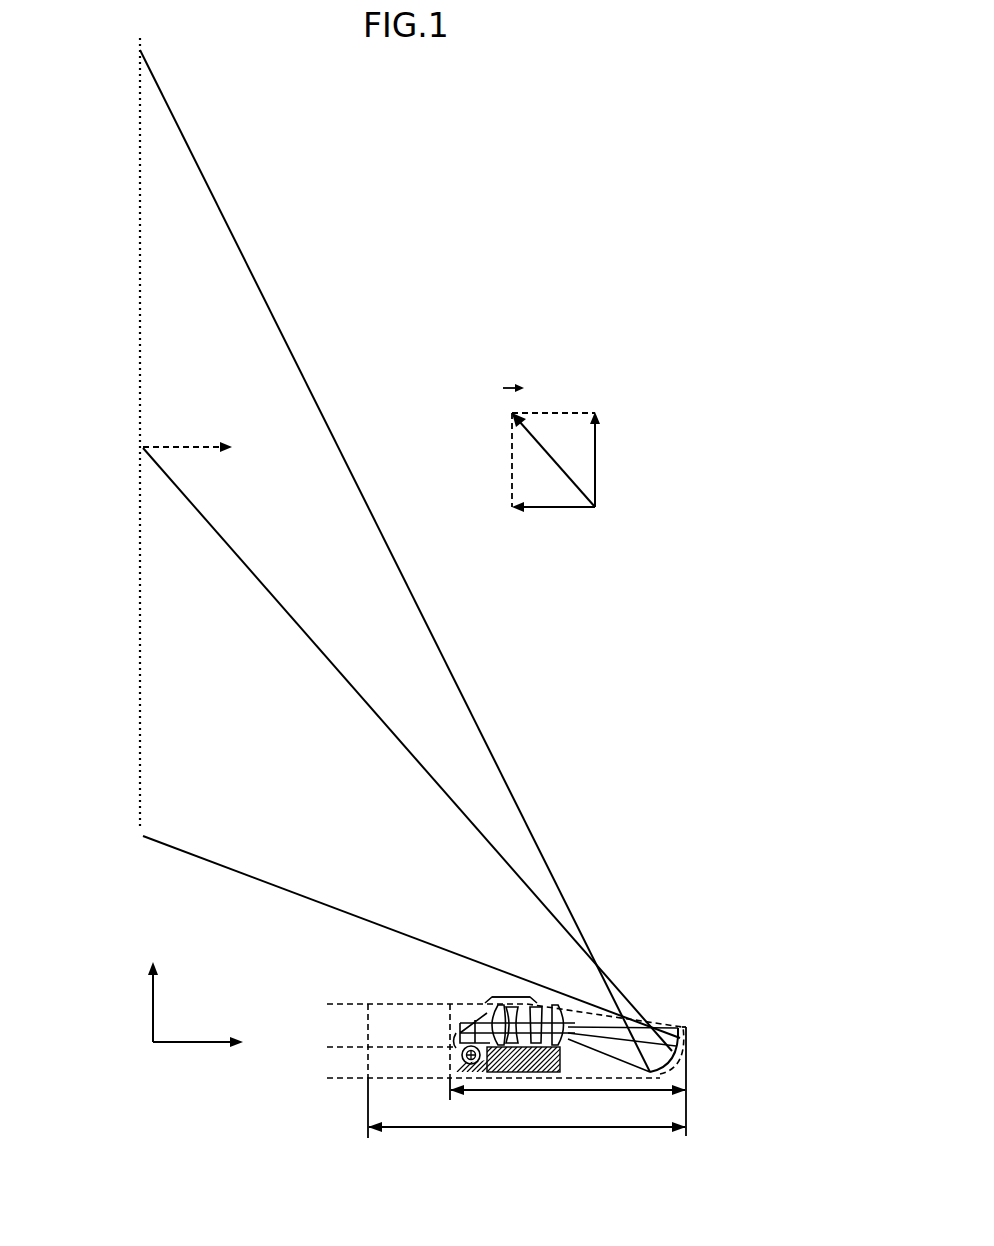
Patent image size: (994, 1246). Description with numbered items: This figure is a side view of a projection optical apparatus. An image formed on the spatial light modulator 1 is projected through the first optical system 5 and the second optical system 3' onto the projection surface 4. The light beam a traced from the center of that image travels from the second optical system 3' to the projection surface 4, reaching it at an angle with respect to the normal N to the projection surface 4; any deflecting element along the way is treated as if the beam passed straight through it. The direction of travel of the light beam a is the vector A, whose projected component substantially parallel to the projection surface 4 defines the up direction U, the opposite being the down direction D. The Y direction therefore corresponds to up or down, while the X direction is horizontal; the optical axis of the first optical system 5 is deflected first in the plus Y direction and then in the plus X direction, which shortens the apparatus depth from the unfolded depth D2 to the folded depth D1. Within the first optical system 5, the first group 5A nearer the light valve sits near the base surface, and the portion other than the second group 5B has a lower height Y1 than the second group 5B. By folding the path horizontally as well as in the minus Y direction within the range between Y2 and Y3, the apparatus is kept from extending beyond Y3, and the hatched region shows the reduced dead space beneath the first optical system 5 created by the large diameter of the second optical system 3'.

The spatial light modulator 1 is at (450, 1045).
The projection surface 4 is at (140, 270).
The first optical system 5 is at (542, 991).
The first group 5A is at (462, 1056).
The second group 5B is at (527, 996).
The second optical system 3' is at (687, 1050).
The light beam a is at (308, 642).
The normal N is at (196, 446).
The vector A is at (543, 450).
The up direction U is at (595, 465).
The down direction D is at (562, 508).
The X direction X is at (208, 1042).
The Y direction Y is at (151, 991).
The height Y1 is at (371, 1048).
The height Y2 is at (407, 1005).
The height Y3 is at (369, 1081).
The depth D1 is at (568, 1101).
The depth D2 is at (527, 1137).